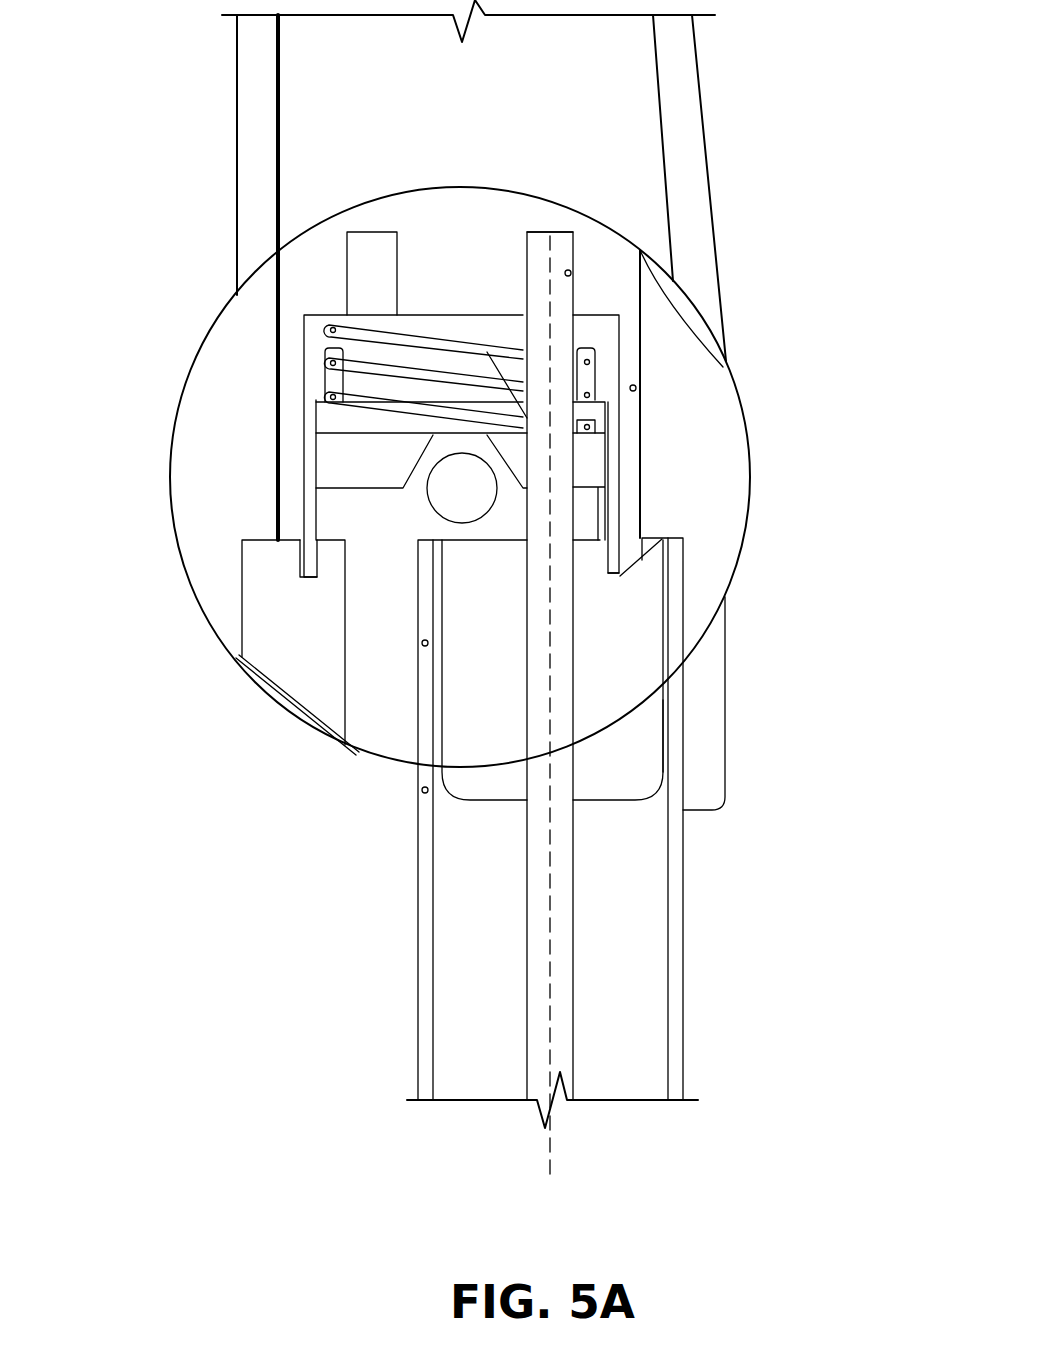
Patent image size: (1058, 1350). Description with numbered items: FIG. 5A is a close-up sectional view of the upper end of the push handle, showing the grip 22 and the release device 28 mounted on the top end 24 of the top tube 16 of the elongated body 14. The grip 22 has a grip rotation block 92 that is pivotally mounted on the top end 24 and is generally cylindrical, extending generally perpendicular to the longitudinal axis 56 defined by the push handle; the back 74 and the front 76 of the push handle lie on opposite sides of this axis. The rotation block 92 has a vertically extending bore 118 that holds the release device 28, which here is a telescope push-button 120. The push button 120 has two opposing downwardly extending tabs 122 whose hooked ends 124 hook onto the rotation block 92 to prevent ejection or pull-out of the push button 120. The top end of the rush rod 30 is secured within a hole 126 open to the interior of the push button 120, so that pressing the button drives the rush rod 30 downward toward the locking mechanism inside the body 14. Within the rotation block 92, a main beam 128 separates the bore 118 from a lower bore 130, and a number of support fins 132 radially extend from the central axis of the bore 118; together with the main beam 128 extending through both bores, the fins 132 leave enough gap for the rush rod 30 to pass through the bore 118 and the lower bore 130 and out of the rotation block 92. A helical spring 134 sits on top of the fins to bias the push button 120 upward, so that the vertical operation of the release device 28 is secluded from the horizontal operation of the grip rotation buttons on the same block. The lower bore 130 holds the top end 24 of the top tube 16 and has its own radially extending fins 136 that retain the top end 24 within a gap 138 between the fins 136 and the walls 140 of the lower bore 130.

The elongated body 14 is at (687, 923).
The top tube 16 is at (428, 965).
The grip 22 is at (683, 113).
The top end 24 is at (675, 632).
The release device 28 is at (515, 217).
The rush rod 30 is at (563, 630).
The longitudinal axis 56 is at (552, 962).
The back 74 is at (418, 1020).
The front 76 is at (678, 988).
The grip rotation block 92 is at (208, 530).
The bore 118 is at (636, 388).
The telescope push-button 120 is at (425, 215).
The tabs 122 is at (292, 495).
The hooked ends 124 is at (297, 552).
The hole 126 is at (571, 273).
The main beam 128 is at (443, 447).
The lower bore 130 is at (358, 748).
The support fins 132 is at (312, 453).
The helical spring 134 is at (404, 398).
The fins 136 is at (650, 747).
The gap 138 is at (422, 643).
The walls 140 is at (422, 790).